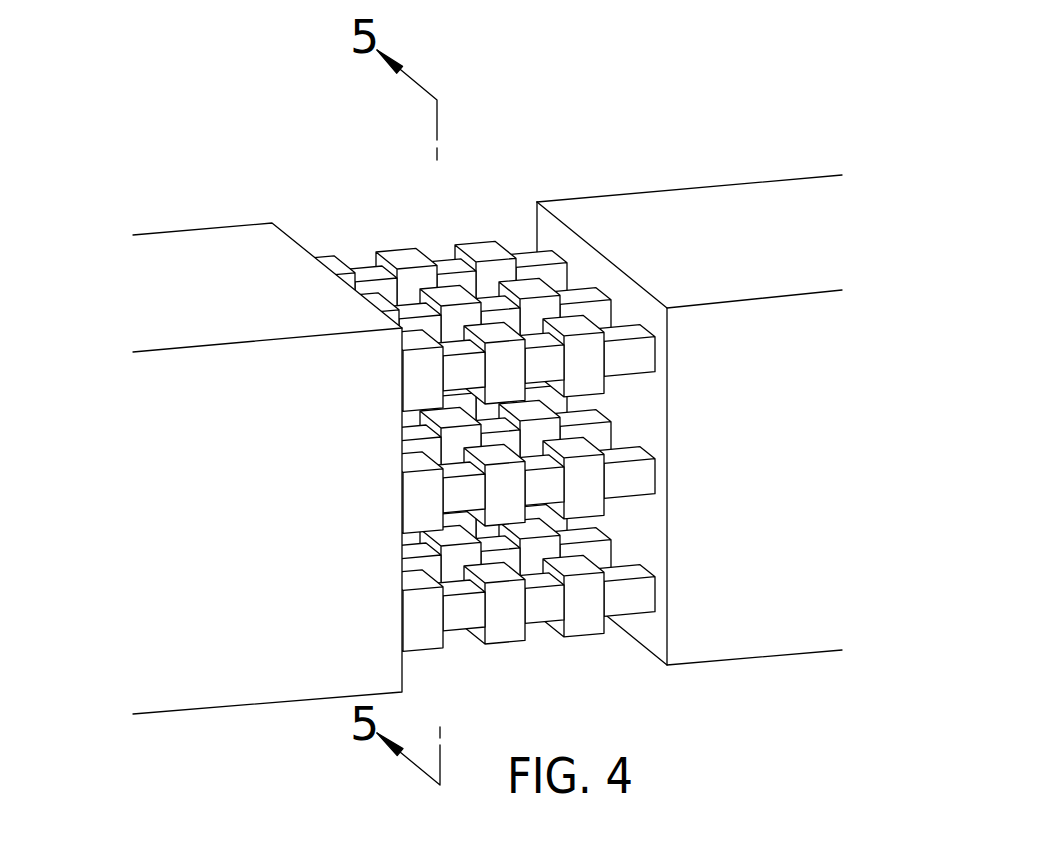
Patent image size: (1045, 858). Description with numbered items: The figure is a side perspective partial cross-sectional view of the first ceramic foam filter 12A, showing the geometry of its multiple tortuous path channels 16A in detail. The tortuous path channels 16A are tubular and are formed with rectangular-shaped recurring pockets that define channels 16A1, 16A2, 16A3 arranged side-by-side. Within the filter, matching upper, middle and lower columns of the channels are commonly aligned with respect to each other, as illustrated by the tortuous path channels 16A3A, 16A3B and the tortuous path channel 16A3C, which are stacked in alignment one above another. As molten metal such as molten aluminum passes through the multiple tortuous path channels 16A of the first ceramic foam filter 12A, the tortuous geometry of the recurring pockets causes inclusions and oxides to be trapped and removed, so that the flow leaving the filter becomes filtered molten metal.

The first ceramic foam filter 12A is at (651, 167).
The tortuous path channels 16A is at (509, 414).
The channel 16A1 is at (482, 253).
The channel 16A2 is at (528, 292).
The channel 16A3 is at (565, 500).
The tortuous path channel 16A3A is at (583, 362).
The tortuous path channel 16A3B is at (582, 482).
The tortuous path channel 16A3C is at (500, 622).